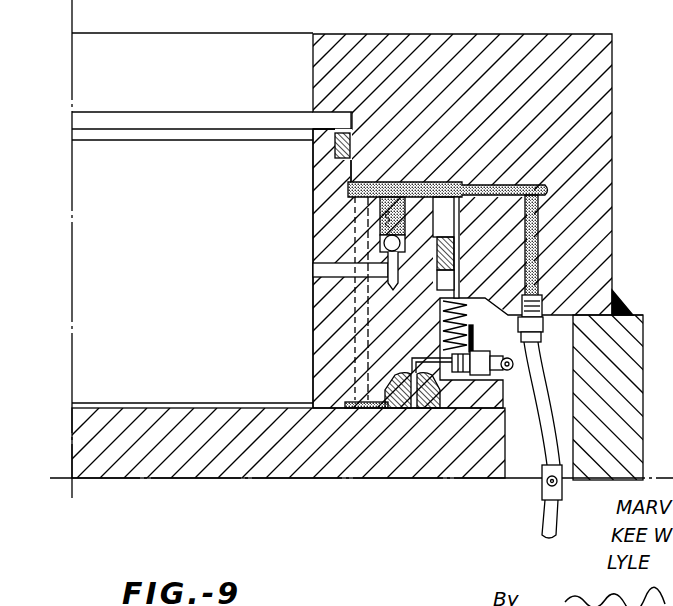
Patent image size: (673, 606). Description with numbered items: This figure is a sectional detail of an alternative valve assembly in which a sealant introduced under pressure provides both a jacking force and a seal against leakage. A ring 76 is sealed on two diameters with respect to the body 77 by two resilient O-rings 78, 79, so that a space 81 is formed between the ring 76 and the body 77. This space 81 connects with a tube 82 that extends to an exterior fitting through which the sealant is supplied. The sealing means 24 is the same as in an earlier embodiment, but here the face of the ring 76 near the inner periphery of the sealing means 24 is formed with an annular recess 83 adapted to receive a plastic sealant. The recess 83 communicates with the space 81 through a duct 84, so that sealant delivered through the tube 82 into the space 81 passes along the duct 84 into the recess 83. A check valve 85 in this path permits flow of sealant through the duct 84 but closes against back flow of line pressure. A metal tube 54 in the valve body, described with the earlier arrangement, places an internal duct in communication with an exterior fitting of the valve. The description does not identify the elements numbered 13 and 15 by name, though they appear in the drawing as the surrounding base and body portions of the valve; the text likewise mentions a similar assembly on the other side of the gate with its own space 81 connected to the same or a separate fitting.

The base 13 is at (128, 461).
The body 15 is at (182, 86).
The sealing means 24 is at (396, 414).
The metal tube 54 is at (503, 357).
The ring 76 is at (318, 237).
The body 77 is at (605, 199).
The resilient O-ring 78 is at (350, 153).
The resilient O-ring 79 is at (460, 259).
The space 81 is at (421, 182).
The tube 82 is at (545, 438).
The annular recess 83 is at (349, 410).
The duct 84 is at (362, 311).
The check valve 85 is at (349, 206).